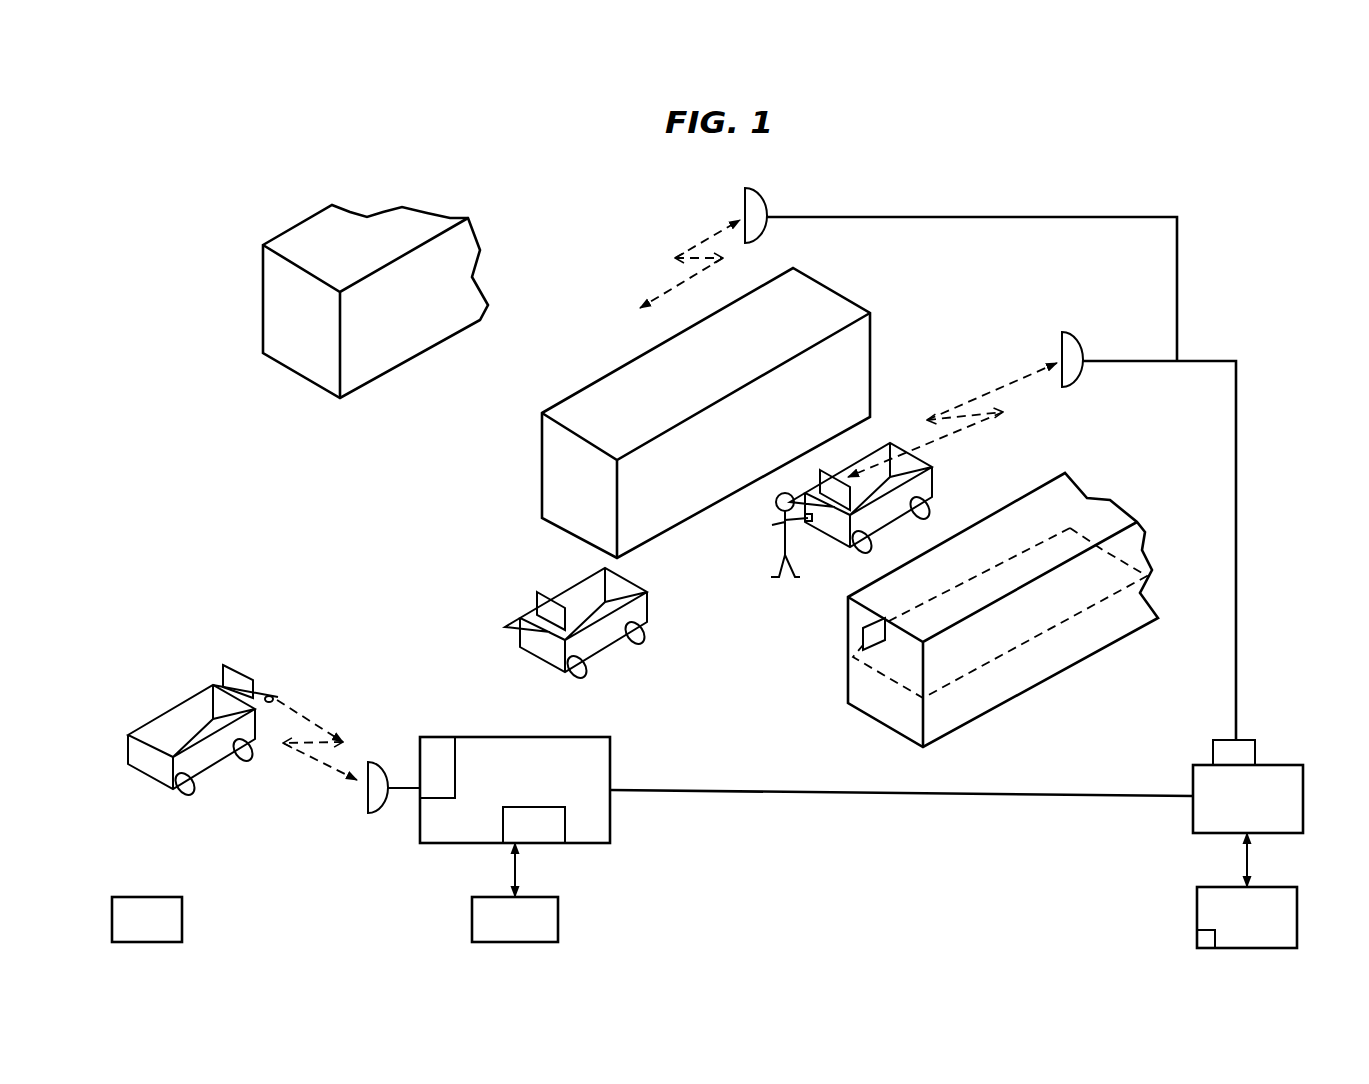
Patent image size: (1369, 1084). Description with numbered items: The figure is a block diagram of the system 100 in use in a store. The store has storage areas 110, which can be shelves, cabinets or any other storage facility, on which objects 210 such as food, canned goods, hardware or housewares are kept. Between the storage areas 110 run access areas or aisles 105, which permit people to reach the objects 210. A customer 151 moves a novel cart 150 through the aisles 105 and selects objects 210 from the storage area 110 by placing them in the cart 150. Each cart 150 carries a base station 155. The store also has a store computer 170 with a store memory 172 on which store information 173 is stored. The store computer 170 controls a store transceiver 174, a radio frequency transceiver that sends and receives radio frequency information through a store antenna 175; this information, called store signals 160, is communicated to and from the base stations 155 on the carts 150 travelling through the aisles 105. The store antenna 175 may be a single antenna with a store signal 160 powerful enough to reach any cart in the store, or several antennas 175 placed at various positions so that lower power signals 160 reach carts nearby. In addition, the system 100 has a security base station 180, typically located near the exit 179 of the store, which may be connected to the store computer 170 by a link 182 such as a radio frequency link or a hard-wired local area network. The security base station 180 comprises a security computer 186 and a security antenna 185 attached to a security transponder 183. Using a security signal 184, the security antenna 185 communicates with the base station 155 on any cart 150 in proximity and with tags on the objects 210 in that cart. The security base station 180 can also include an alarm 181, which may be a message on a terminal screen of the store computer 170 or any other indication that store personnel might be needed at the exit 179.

The system 100 is at (973, 222).
The aisle 105 is at (473, 437).
The storage area 110 is at (423, 326).
The cart 150 is at (570, 590).
The customer 151 is at (772, 525).
The base station 155 is at (820, 483).
The store signal 160 is at (700, 245).
The store computer 170 is at (1282, 770).
The store memory 172 is at (1297, 917).
The store information 173 is at (1198, 933).
The store transceiver 174 is at (1215, 750).
The store antenna 175 is at (765, 207).
The exit 179 is at (148, 897).
The security base station 180 is at (610, 762).
The alarm 181 is at (472, 912).
The link 182 is at (902, 797).
The security transponder 183 is at (440, 740).
The security signal 184 is at (318, 728).
The security antenna 185 is at (373, 762).
The security computer 186 is at (555, 837).
The object 210 is at (885, 620).